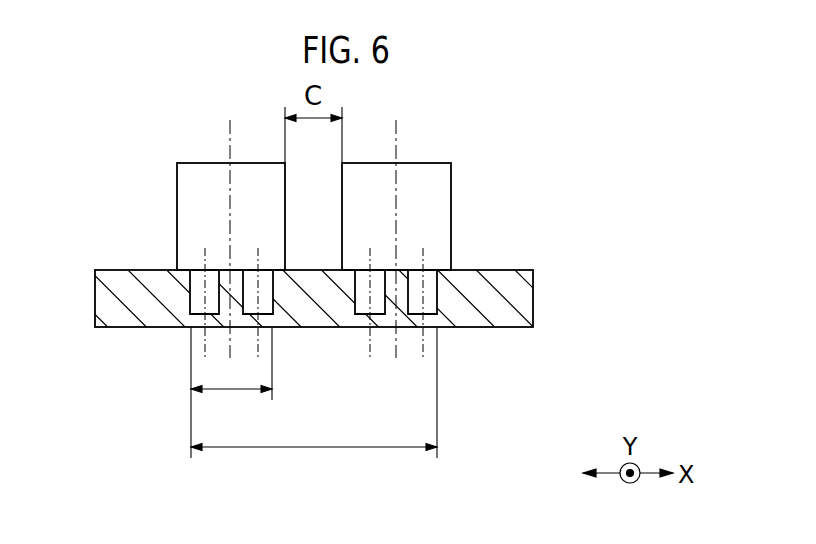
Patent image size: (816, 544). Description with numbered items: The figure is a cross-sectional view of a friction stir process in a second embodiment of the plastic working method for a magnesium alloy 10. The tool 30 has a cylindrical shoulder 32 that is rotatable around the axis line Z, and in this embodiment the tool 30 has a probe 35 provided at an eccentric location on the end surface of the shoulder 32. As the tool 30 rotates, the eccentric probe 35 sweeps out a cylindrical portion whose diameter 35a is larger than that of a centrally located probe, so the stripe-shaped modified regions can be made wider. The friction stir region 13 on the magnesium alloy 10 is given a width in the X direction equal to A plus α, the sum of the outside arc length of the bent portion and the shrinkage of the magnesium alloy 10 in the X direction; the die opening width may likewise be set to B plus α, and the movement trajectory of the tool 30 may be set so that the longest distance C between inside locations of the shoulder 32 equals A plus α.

The magnesium alloy 10 is at (533, 295).
The friction stir region 13 is at (380, 447).
The tool 30 is at (307, 229).
The shoulder 32 is at (188, 163).
The probe 35 is at (188, 292).
The diameter 35a is at (231, 392).